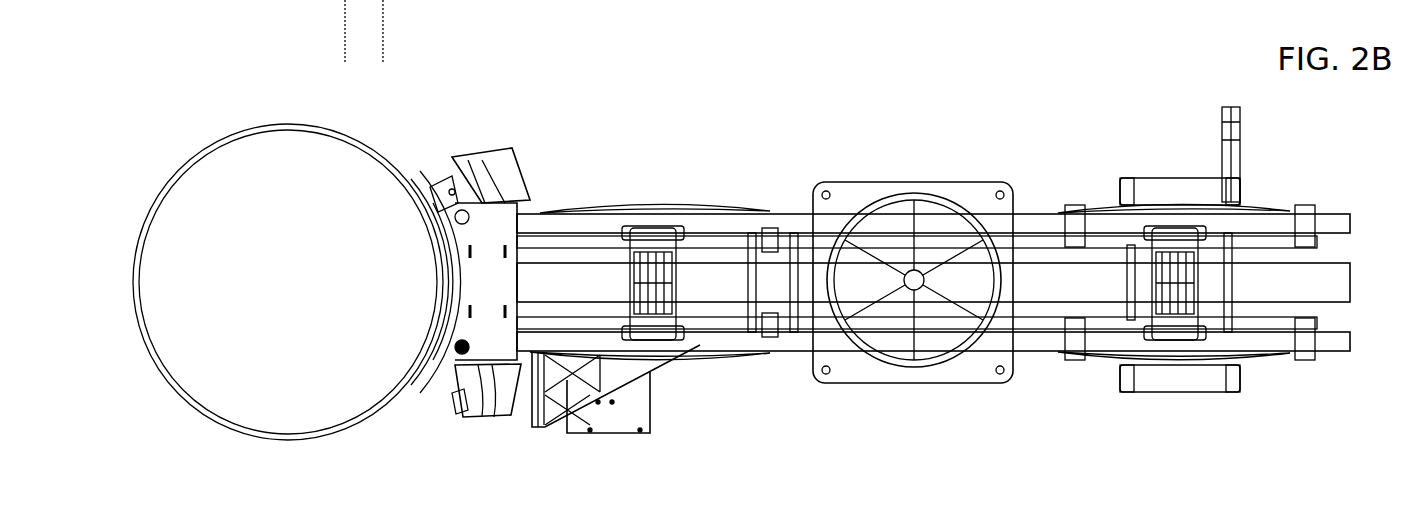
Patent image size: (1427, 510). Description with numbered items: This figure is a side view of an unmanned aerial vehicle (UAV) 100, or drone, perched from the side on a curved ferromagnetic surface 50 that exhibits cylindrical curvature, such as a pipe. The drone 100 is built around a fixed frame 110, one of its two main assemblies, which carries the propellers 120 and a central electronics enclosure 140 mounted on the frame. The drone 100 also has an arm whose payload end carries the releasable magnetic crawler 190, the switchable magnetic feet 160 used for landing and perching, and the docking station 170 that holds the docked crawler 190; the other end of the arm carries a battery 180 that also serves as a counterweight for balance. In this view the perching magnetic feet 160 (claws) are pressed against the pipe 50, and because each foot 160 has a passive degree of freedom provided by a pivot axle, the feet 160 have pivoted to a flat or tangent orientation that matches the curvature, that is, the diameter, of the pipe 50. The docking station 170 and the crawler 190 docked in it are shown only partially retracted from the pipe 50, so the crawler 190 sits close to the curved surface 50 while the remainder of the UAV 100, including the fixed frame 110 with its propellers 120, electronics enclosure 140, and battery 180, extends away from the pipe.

The curved ferromagnetic surface 50 is at (277, 349).
The unmanned aerial vehicle 100 is at (742, 140).
The fixed frame 110 is at (1094, 296).
The propellers 120 is at (627, 208).
The electronics enclosure 140 is at (848, 200).
The magnetic feet 160 is at (503, 167).
The docking station 170 is at (494, 36).
The battery 180 is at (1160, 185).
The releasable magnetic crawler 190 is at (627, 415).